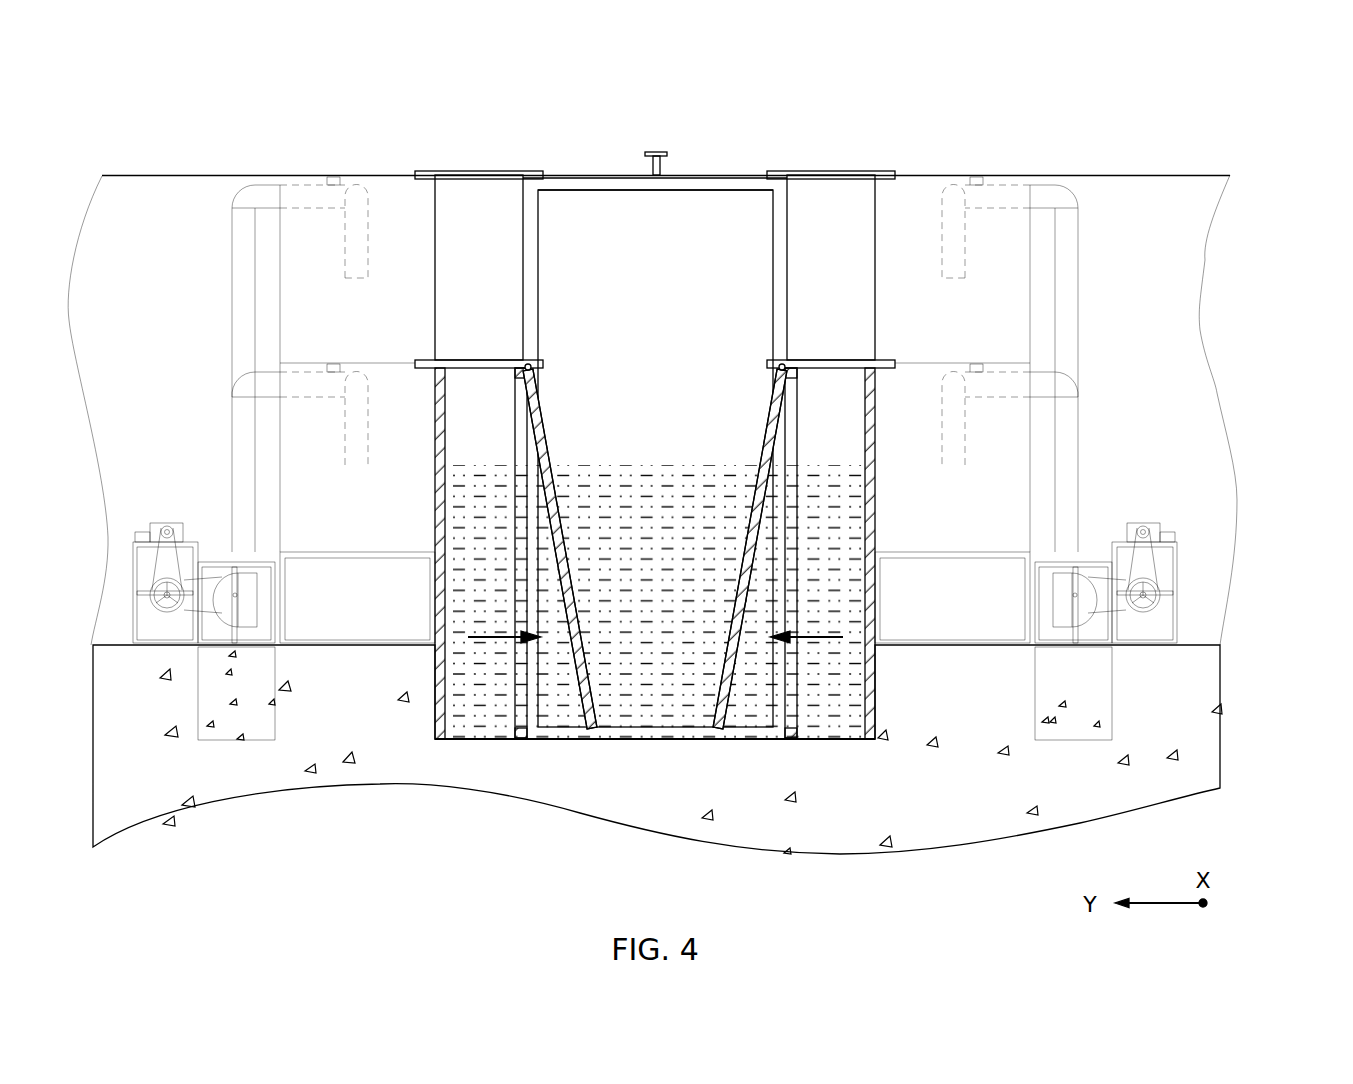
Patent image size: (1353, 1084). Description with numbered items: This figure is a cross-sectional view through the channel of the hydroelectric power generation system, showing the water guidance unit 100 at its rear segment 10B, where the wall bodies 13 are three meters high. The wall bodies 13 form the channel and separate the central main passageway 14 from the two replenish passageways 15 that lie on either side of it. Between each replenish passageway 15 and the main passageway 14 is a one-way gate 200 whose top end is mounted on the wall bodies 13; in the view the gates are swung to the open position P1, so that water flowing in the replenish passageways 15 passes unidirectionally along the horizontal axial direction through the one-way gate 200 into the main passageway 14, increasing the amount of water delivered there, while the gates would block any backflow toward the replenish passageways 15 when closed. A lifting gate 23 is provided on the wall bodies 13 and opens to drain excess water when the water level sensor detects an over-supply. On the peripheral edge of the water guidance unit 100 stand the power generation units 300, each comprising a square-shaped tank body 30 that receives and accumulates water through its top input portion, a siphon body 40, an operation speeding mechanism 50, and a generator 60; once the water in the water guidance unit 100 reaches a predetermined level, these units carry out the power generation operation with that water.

The water guidance unit 100 is at (833, 143).
The one-way gate 200 is at (553, 440).
The open position P1 is at (540, 412).
The lifting gate 23 is at (685, 208).
The power generation unit 300 is at (786, 364).
The siphon body 40 is at (1070, 387).
The tank body 30 is at (1033, 462).
The generator 60 is at (1165, 525).
The operation speeding mechanism 50 is at (1182, 610).
The wall body 13 is at (438, 690).
The replenish passageway 15 is at (473, 700).
The main passageway 14 is at (632, 700).
The rear segment 10B is at (673, 683).